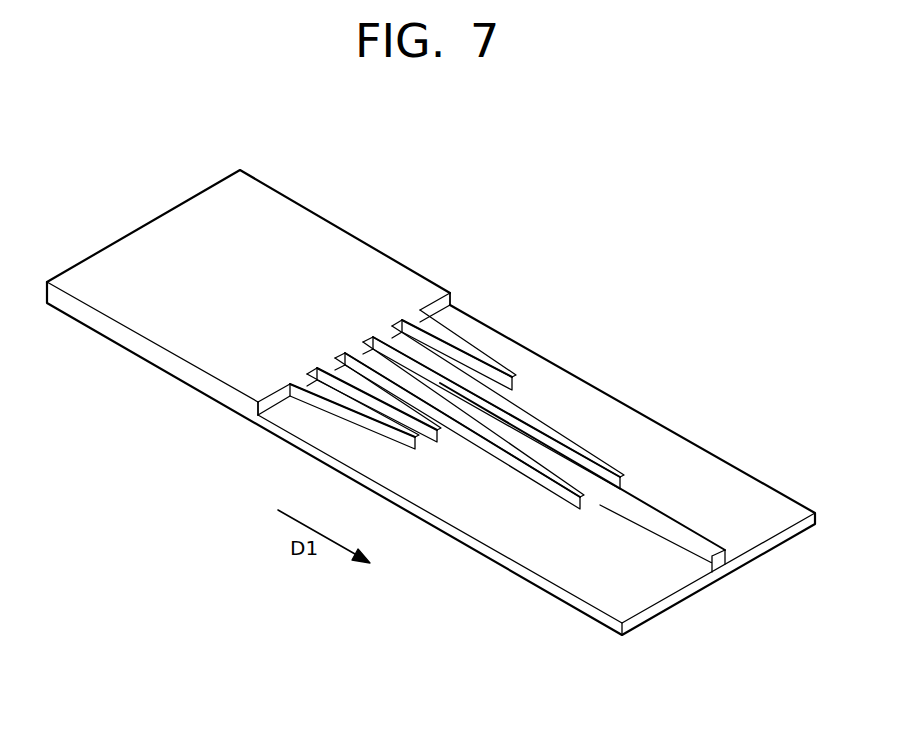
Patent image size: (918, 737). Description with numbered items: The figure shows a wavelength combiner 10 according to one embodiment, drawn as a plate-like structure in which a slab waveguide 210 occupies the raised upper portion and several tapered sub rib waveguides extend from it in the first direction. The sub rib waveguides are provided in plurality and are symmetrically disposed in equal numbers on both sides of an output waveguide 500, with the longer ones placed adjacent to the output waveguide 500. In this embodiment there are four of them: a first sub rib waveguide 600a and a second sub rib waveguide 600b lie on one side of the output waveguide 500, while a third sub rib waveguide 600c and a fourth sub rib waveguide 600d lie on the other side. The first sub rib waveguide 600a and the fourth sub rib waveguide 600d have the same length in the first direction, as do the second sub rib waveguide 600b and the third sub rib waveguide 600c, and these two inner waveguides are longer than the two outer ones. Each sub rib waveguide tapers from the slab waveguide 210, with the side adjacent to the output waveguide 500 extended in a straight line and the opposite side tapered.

The wavelength combiner 10 is at (578, 163).
The slab waveguide 210 is at (330, 236).
The output waveguide 500 is at (713, 552).
The first sub rib waveguide 600a is at (448, 340).
The second sub rib waveguide 600b is at (537, 423).
The third sub rib waveguide 600c is at (468, 446).
The fourth sub rib waveguide 600d is at (345, 400).